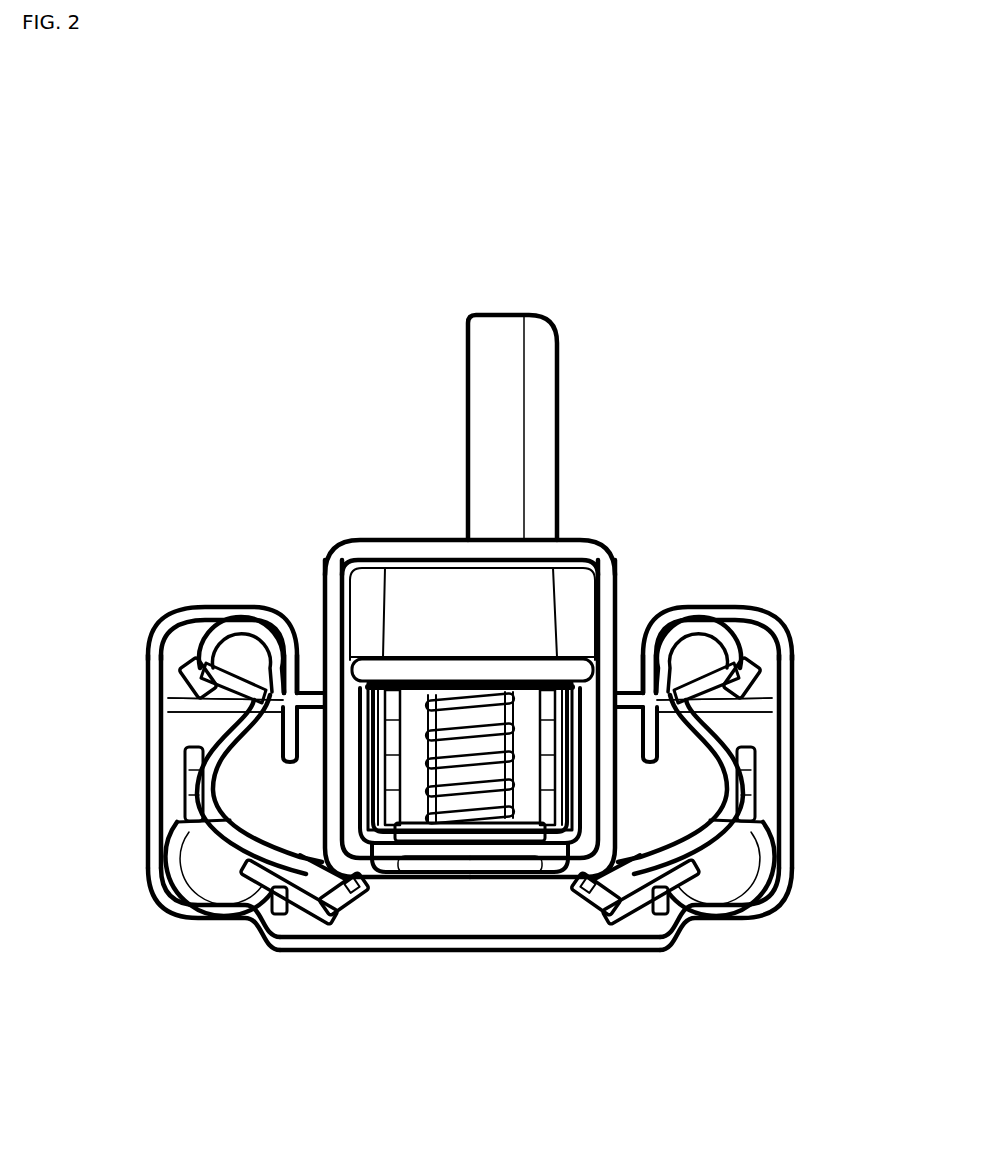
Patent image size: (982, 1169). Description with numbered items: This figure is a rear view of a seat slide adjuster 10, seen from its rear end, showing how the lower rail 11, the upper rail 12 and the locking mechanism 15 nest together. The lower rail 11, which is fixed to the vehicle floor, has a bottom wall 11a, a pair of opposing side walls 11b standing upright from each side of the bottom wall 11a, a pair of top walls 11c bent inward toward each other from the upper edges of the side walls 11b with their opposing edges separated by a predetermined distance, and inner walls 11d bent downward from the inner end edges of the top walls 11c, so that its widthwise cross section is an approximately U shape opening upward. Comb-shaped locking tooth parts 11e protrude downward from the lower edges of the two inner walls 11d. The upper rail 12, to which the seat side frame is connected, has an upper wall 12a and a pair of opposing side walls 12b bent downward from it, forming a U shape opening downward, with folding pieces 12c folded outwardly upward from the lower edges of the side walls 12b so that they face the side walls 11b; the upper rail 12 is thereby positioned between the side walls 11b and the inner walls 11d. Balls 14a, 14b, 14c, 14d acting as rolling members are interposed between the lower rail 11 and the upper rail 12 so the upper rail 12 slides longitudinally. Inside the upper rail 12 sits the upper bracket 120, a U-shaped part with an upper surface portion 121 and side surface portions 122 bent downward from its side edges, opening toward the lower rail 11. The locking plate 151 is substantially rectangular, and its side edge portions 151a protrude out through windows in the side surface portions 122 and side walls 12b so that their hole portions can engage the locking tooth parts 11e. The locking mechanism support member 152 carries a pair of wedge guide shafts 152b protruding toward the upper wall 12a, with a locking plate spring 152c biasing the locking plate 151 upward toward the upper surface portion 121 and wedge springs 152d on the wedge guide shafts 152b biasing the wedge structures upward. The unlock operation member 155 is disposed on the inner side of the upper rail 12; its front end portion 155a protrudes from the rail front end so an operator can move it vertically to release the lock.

The seat slide adjuster 10 is at (300, 335).
The lower rail 11 is at (268, 952).
The bottom wall 11a is at (596, 942).
The side wall (first side wall) 11b is at (156, 805).
The top wall 11c is at (180, 630).
The inner wall 11d is at (262, 662).
The locking tooth part 11e is at (230, 784).
The upper rail 12 is at (356, 538).
The upper wall 12a is at (418, 548).
The side wall (second side wall) 12b is at (330, 775).
The folding piece 12c is at (196, 762).
The upper bracket 120 is at (572, 606).
The upper surface portion 121 is at (497, 608).
The side surface portion 122 is at (343, 793).
The ball 14a is at (242, 626).
The ball 14b is at (692, 628).
The ball 14c is at (190, 893).
The ball 14d is at (738, 900).
The locking mechanism 15 is at (365, 937).
The locking plate 151 is at (315, 690).
The side edge portion 151a is at (216, 704).
The locking mechanism support member 152 is at (456, 825).
The wedge guide shaft 152b is at (471, 832).
The locking plate spring 152c is at (405, 882).
The wedge spring 152d is at (492, 832).
The unlock operation member 155 is at (562, 352).
The front end portion 155a is at (491, 327).